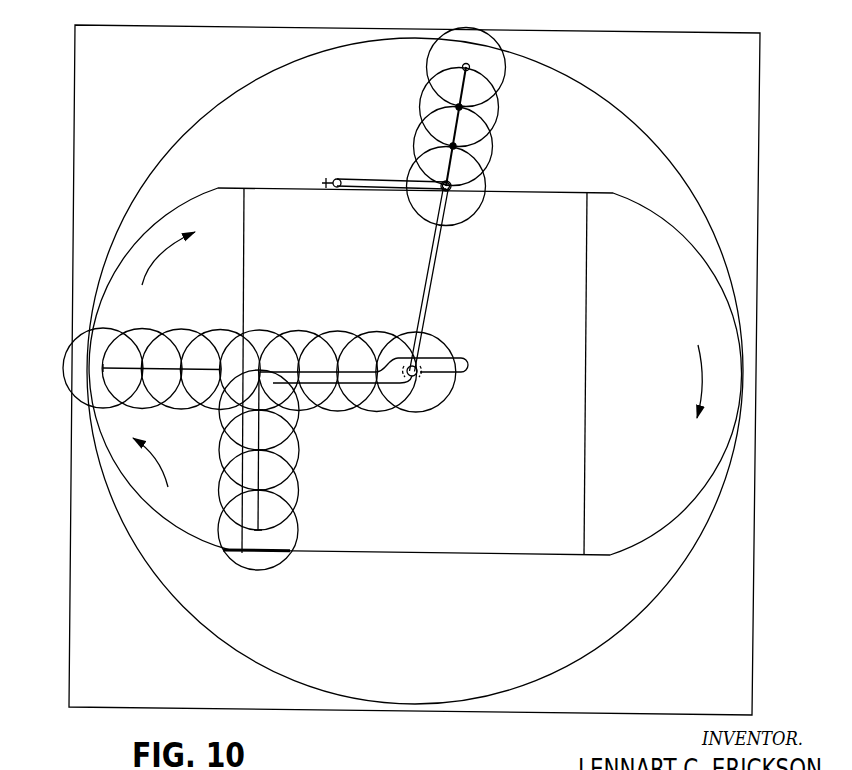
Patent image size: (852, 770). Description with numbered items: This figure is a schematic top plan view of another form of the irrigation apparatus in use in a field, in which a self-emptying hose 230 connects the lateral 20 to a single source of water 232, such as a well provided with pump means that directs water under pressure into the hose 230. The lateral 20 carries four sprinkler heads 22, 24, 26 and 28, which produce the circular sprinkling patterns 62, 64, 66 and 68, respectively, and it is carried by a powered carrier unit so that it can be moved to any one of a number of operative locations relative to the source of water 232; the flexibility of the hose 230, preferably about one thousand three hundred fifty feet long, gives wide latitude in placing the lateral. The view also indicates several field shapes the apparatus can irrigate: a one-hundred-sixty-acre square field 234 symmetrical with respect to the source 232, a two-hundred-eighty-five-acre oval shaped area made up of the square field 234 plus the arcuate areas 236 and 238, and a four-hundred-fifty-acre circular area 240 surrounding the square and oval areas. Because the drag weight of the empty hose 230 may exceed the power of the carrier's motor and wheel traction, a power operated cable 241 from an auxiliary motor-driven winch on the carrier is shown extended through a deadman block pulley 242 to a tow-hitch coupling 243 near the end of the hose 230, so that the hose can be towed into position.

The lateral 20 is at (163, 367).
The head 22 is at (470, 200).
The head 24 is at (490, 163).
The head 26 is at (497, 127).
The head 28 is at (495, 92).
The circular sprinkling pattern 62 is at (408, 206).
The circular sprinkling pattern 64 is at (413, 154).
The circular sprinkling pattern 66 is at (420, 111).
The circular sprinkling pattern 68 is at (428, 64).
The self-emptying hose 230 is at (430, 307).
The source of water 232 is at (423, 382).
The square field 234 is at (455, 527).
The arcuate area 236 is at (655, 500).
The arcuate area 238 is at (142, 470).
The circular area 240 is at (580, 118).
The power operated cable 241 is at (336, 178).
The deadman block pulley 242 is at (326, 180).
The tow-hitch coupling 243 is at (448, 192).